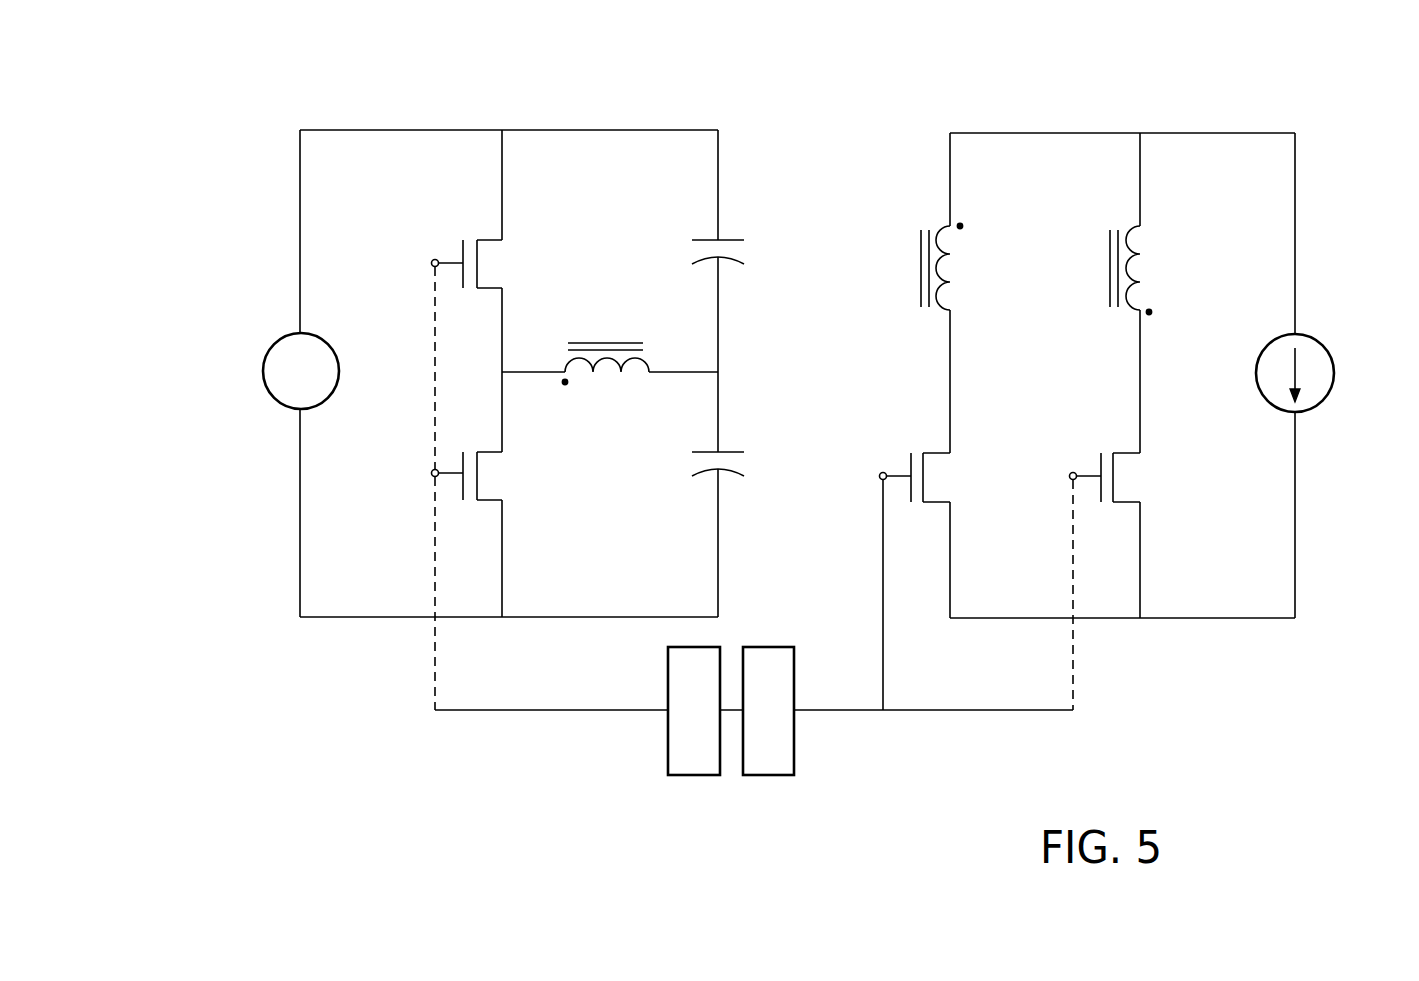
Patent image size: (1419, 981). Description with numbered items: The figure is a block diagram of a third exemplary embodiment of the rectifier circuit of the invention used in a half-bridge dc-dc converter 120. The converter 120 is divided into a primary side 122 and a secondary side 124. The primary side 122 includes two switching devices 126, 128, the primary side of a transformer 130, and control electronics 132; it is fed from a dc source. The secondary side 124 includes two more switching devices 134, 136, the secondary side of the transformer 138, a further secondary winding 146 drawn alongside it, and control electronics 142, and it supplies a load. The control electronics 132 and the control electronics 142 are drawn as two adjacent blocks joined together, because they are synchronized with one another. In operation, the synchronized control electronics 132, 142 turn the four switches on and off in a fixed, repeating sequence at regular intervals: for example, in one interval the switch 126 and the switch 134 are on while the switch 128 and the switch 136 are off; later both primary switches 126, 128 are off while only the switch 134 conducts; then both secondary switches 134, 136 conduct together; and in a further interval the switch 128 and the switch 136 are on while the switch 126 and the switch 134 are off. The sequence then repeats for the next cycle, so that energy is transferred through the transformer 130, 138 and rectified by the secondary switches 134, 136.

The half-bridge dc-dc converter 120 is at (1112, 46).
The primary side 122 is at (718, 107).
The secondary side 124 is at (1303, 113).
The switching device 126 is at (493, 247).
The switching device 128 is at (493, 457).
The primary side of transformer 130 is at (600, 341).
The control electronics 132 is at (669, 740).
The switching device 134 is at (940, 458).
The switching device 136 is at (1130, 458).
The secondary side of transformer 138 is at (944, 255).
The control electronics 142 is at (792, 740).
The second secondary winding 146 is at (1137, 257).